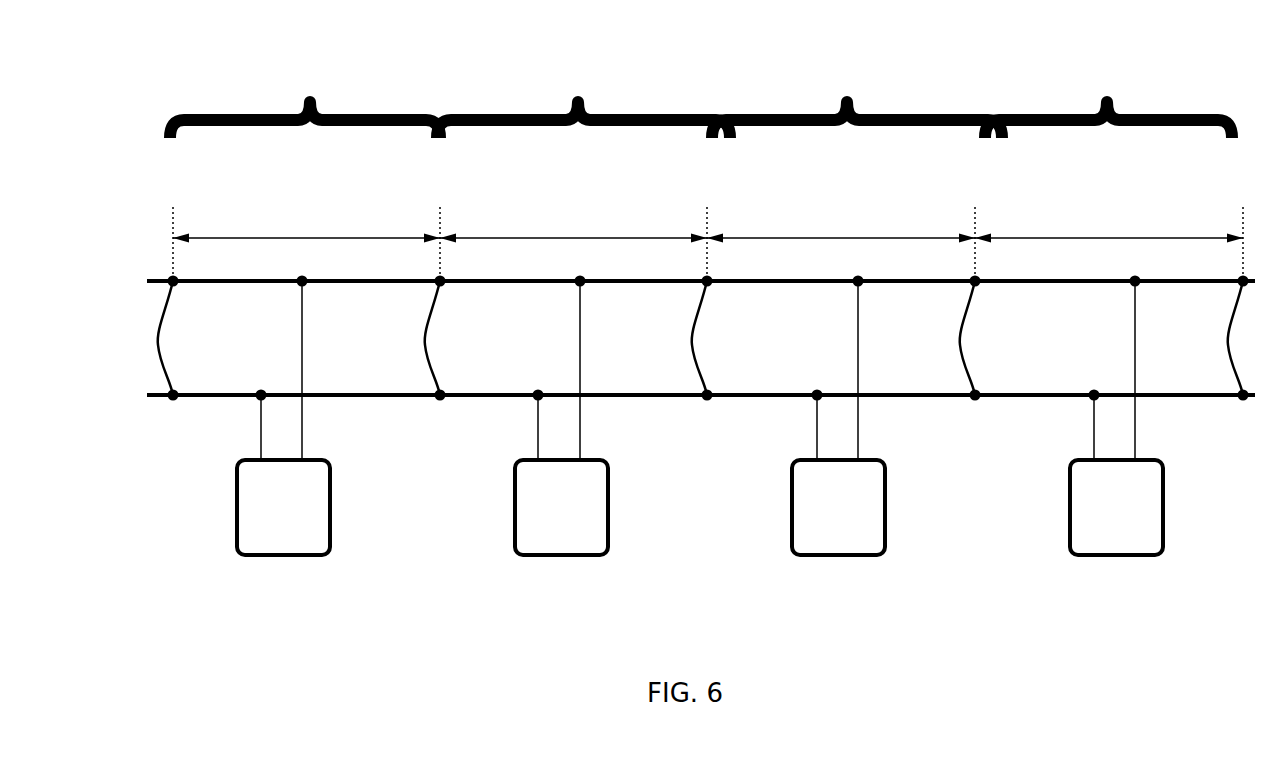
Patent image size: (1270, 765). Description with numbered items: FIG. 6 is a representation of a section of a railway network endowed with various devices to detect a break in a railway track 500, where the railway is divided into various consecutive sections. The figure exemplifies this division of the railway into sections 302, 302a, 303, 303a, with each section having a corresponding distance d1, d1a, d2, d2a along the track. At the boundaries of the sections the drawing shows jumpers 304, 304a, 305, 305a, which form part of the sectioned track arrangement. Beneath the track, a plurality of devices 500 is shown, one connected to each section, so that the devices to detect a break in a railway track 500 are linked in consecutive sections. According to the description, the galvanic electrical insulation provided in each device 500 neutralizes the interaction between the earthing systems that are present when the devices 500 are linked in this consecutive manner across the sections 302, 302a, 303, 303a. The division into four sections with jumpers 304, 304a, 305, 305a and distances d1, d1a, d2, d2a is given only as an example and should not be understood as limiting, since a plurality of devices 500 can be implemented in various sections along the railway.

The section 302 is at (305, 88).
The section 302a is at (583, 88).
The section 303 is at (857, 97).
The section 303a is at (1108, 94).
The distance d1 is at (292, 213).
The distance d1a is at (580, 213).
The distance d2 is at (839, 213).
The distance d2a is at (1107, 213).
The jumper 304 is at (410, 383).
The jumper 304a is at (679, 383).
The jumper 305 is at (949, 383).
The jumper 305a is at (1217, 383).
The device to detect a break in a railway track 500 is at (276, 582).